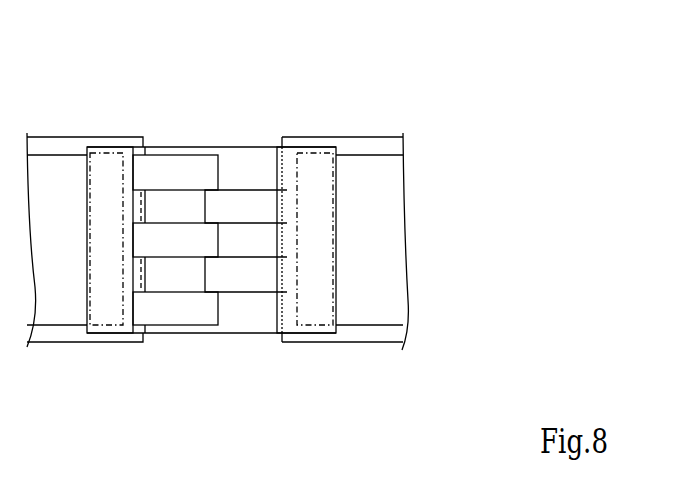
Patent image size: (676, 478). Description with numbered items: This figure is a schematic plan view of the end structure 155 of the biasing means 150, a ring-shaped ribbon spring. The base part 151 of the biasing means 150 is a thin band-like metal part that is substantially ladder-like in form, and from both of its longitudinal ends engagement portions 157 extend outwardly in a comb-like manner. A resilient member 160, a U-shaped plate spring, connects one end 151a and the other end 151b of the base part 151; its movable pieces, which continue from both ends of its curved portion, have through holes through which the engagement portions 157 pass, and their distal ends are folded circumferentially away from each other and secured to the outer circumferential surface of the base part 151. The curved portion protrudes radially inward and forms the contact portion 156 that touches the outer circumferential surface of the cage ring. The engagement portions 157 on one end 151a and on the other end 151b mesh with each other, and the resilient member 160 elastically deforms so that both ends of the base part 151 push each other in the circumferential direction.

The biasing means 150 is at (267, 234).
The base part 151 is at (202, 221).
The one end 151a is at (92, 146).
The other end 151b is at (311, 235).
The end structure 155 is at (210, 263).
The contact portion 156 is at (208, 336).
The engagement portions 157 is at (186, 167).
The resilient member 160 is at (305, 336).